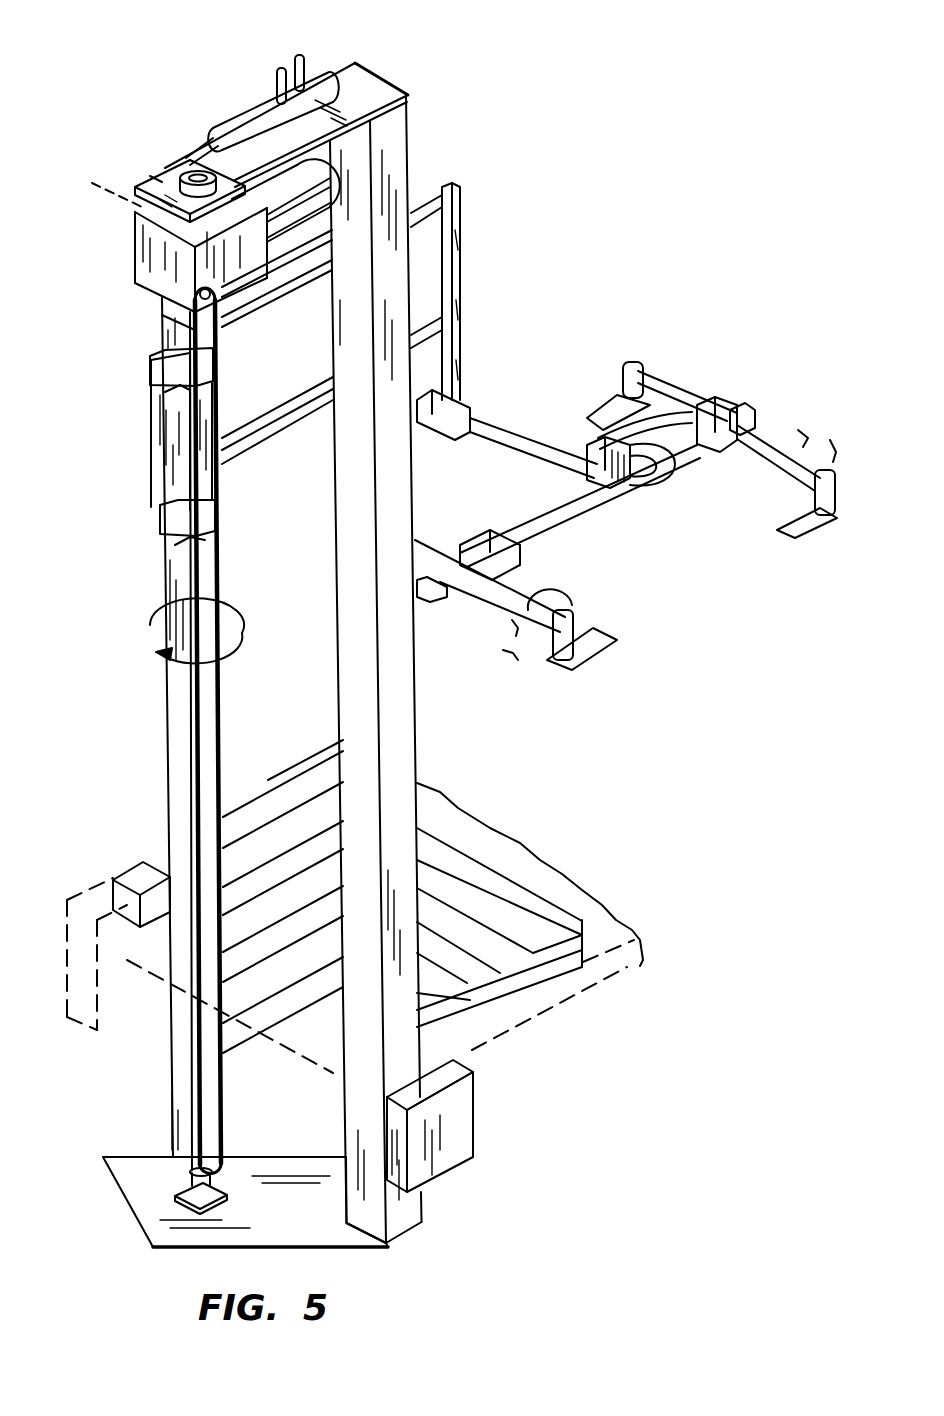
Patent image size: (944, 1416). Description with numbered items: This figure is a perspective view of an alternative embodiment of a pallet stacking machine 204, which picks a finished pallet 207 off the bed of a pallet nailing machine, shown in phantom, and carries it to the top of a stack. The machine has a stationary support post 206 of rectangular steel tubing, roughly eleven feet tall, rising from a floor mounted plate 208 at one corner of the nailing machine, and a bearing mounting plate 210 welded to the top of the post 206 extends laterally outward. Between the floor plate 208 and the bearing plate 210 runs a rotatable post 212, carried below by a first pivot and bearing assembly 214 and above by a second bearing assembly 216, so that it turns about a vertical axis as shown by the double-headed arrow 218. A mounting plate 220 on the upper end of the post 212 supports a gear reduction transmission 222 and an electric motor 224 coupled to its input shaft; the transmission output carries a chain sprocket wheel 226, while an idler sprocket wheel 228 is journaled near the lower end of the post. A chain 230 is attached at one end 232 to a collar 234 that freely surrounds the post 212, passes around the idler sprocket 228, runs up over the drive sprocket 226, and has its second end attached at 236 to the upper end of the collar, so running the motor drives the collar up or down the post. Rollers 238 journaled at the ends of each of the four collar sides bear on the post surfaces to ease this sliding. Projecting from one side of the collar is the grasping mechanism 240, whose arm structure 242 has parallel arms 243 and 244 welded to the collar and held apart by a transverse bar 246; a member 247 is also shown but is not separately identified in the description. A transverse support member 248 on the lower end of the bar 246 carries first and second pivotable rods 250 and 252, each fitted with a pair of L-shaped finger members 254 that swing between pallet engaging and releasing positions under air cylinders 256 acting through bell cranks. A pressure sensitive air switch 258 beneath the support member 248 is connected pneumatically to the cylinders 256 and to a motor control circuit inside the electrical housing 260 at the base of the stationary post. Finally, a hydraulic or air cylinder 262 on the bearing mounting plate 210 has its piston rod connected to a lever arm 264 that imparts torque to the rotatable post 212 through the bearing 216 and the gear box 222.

The pallet stacking machine 204 is at (578, 762).
The stationary support post 206 is at (398, 758).
The pallet 207 is at (476, 868).
The floor mounted plate 208 is at (147, 1208).
The bearing mounting plate 210 is at (352, 62).
The rotatable post 212 is at (168, 760).
The first pivot and bearing assembly 214 is at (193, 1177).
The second bearing assembly 216 is at (100, 183).
The double-headed arrow 218 is at (133, 626).
The mounting plate 220 is at (150, 293).
The gear reduction transmission 222 is at (135, 265).
The electric motor 224 is at (290, 222).
The chain sprocket wheel 226 is at (220, 312).
The idler sprocket wheel 228 is at (210, 1160).
The chain 230 is at (224, 758).
The first end of chain 232 is at (190, 532).
The collar 234 is at (160, 447).
The second chain end attachment 236 is at (180, 400).
The rollers 238 is at (148, 368).
The grasping mechanism 240 is at (692, 575).
The arm structure 242 is at (440, 176).
The arm 243 is at (414, 205).
The arm 244 is at (297, 415).
The transversely extending bar 246 is at (458, 240).
The arm 247 is at (541, 448).
The transverse support member 248 is at (594, 514).
The first pivotable rod 250 is at (780, 474).
The second pivotable rod 252 is at (500, 605).
The finger members 254 is at (782, 536).
The air cylinders 256 is at (717, 447).
The pressure sensitive air switch 258 is at (636, 492).
The electrical housing 260 is at (432, 1178).
The hydraulic or air cylinder 262 is at (336, 76).
The lever arm 264 is at (158, 176).